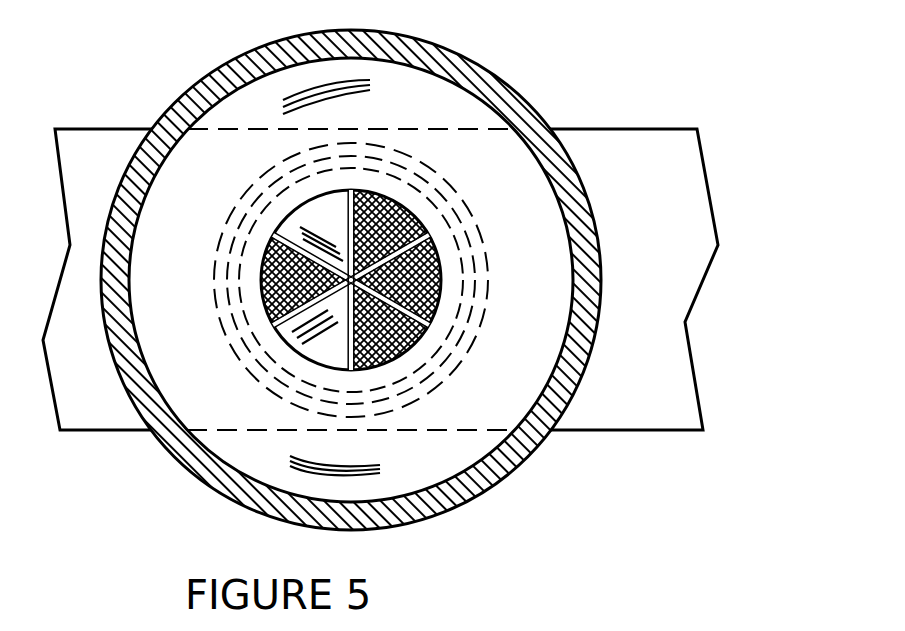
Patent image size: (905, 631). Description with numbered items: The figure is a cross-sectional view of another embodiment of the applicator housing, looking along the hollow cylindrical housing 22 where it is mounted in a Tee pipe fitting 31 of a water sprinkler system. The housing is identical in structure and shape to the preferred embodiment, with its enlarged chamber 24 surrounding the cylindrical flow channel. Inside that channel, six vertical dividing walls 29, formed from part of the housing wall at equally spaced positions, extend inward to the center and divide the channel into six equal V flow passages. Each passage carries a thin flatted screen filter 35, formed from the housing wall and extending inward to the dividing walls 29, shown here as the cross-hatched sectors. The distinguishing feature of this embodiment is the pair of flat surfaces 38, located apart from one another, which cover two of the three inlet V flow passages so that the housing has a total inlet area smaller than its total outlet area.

The hollow cylindrical housing 22 is at (543, 87).
The enlarged chamber 24 is at (443, 447).
The vertical dividing walls 29 is at (352, 190).
The Tee pipe fitting 31 is at (717, 217).
The thin flatted screen filter 35 is at (261, 283).
The flat surfaces 38 is at (320, 222).